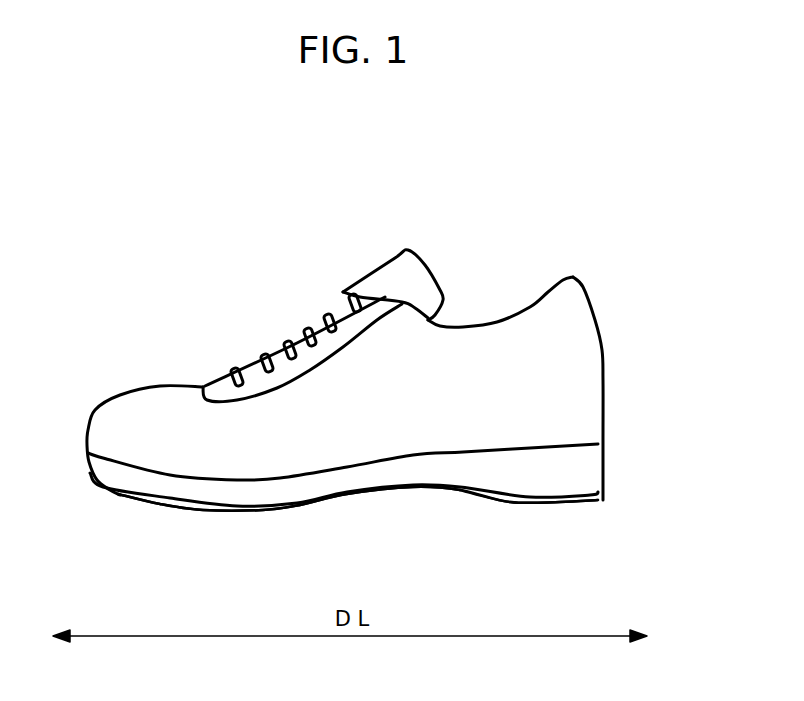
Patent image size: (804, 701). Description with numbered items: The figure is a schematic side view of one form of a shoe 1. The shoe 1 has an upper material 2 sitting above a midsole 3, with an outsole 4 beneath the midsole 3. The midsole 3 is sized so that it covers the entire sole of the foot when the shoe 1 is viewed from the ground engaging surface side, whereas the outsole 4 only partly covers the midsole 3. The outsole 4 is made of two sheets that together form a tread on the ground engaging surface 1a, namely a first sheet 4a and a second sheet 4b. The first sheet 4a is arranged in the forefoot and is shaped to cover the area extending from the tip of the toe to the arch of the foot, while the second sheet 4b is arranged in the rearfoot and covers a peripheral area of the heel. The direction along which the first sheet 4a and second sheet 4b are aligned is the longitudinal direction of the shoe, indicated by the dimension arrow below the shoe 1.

The shoe 1 is at (553, 255).
The ground engaging surface 1a is at (286, 538).
The upper material 2 is at (555, 380).
The midsole 3 is at (550, 473).
The outsole 4 is at (568, 503).
The first sheet 4a is at (142, 498).
The second sheet 4b is at (522, 503).